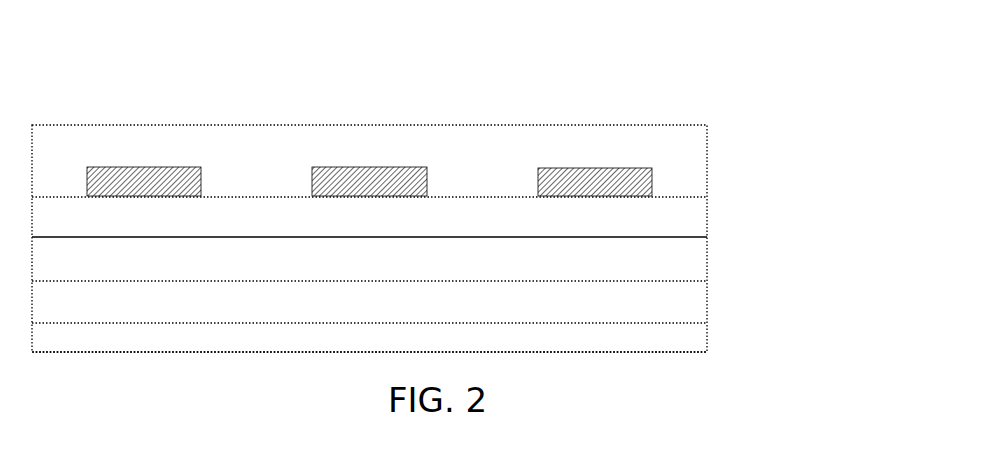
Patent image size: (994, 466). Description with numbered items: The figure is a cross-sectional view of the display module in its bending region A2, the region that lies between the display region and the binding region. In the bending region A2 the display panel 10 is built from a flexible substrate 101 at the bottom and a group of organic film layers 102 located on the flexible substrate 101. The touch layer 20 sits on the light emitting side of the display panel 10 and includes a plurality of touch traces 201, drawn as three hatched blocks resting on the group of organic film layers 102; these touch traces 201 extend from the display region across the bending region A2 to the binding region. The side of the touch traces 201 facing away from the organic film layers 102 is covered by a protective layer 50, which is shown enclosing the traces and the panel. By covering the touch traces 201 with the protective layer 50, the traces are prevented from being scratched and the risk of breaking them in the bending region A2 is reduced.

The bending region A2 is at (113, 62).
The touch layer 20 is at (369, 103).
The touch traces 201 is at (558, 168).
The protective layer 50 is at (710, 163).
The display panel 10 is at (444, 274).
The group of organic film layers 102 is at (717, 208).
The flexible substrate 101 is at (708, 348).